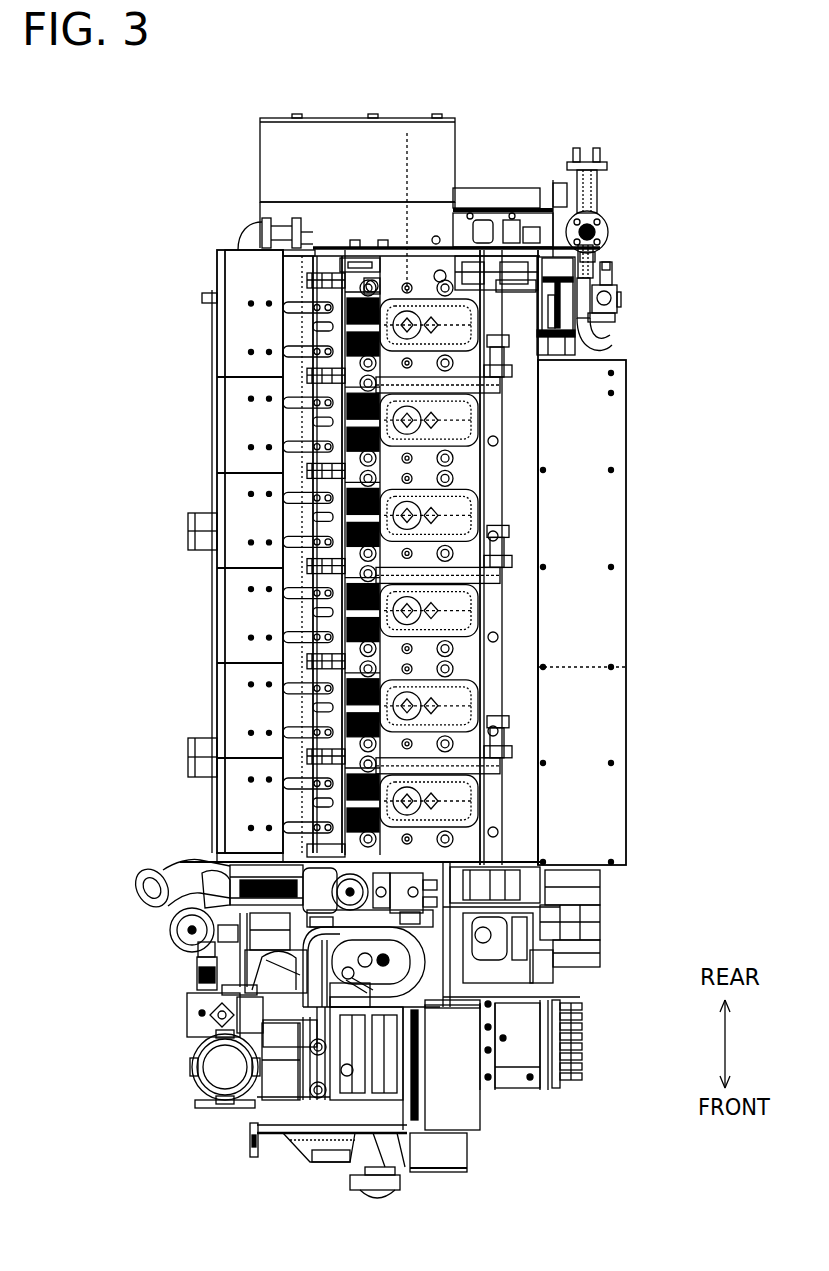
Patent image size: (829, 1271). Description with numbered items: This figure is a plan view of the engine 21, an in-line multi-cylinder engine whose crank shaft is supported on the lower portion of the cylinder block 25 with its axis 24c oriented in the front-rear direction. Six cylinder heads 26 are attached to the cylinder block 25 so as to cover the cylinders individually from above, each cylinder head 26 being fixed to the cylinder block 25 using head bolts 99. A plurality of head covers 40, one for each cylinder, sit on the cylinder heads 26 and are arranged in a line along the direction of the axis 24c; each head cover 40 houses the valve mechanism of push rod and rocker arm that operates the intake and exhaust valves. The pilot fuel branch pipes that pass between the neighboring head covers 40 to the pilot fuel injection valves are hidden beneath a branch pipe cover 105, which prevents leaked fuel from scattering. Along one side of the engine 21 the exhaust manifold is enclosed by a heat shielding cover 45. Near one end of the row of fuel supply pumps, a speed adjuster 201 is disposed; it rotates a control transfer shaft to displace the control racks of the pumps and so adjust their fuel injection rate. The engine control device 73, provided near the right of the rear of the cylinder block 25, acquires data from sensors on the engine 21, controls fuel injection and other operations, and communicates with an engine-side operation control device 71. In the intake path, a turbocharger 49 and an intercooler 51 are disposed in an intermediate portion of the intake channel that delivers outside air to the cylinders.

The engine 21 is at (714, 170).
The engine control device 73 is at (312, 130).
The cylinder block 25 is at (327, 247).
The axis 24c is at (407, 160).
The head bolts 99 is at (372, 283).
The heat shielding cover 45 is at (226, 422).
The head covers 40 is at (478, 323).
The cylinder heads 26 is at (453, 290).
The branch pipe cover 105 is at (500, 383).
The speed adjuster 201 is at (535, 1003).
The engine-side operation control device 71 is at (517, 1082).
The turbocharger 49 is at (270, 1123).
The intercooler 51 is at (325, 1158).